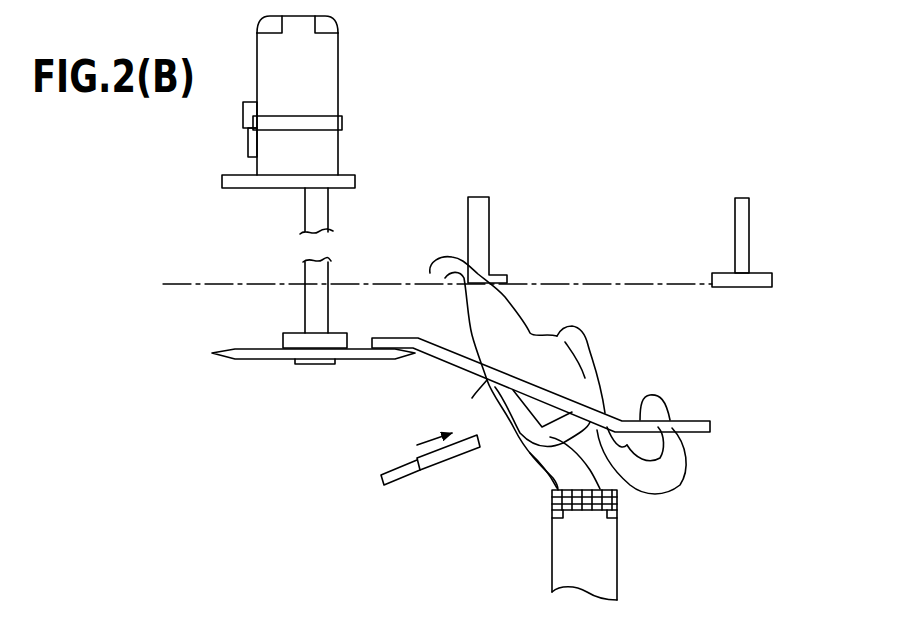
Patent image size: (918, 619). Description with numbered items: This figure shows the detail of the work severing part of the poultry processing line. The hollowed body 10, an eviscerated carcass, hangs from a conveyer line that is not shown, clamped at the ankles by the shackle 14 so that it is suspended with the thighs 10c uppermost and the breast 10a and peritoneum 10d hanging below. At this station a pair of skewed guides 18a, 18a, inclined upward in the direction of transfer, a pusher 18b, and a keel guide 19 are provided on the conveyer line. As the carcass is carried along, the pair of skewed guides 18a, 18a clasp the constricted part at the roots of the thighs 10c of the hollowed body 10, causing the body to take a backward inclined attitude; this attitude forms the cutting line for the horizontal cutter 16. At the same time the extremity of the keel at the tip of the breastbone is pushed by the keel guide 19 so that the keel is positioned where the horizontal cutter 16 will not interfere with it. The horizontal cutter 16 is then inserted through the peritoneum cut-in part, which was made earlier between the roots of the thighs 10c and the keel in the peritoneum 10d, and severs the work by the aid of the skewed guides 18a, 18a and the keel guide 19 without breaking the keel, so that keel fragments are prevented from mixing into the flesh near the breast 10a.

The hollowed body 10 is at (605, 350).
The breast 10a is at (530, 457).
The thighs 10c is at (523, 315).
The peritoneum 10d is at (476, 394).
The shackle 14 is at (489, 225).
The horizontal cutter 16 is at (252, 366).
The skewed guide 18a is at (695, 421).
The pusher 18b is at (613, 557).
The keel guide 19 is at (430, 468).